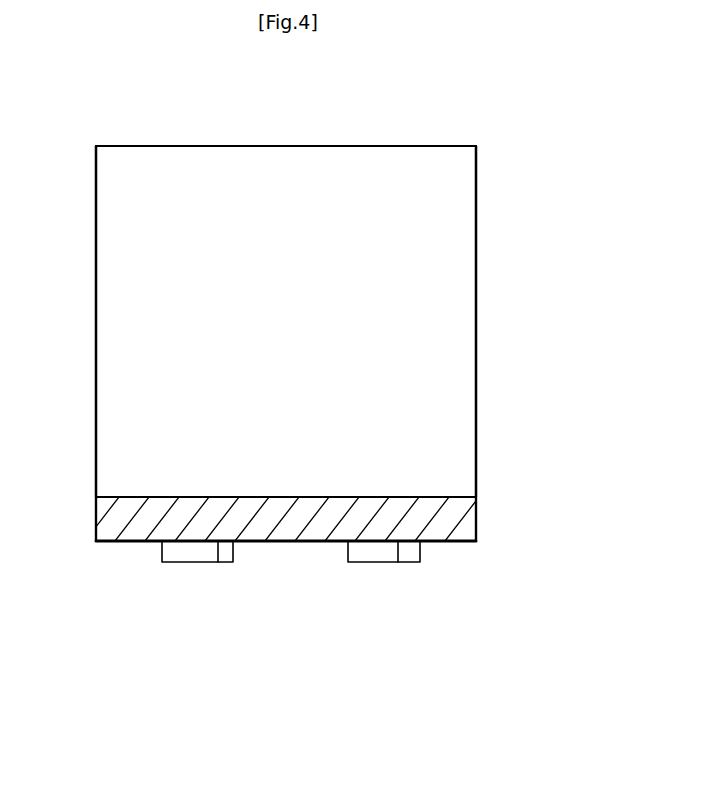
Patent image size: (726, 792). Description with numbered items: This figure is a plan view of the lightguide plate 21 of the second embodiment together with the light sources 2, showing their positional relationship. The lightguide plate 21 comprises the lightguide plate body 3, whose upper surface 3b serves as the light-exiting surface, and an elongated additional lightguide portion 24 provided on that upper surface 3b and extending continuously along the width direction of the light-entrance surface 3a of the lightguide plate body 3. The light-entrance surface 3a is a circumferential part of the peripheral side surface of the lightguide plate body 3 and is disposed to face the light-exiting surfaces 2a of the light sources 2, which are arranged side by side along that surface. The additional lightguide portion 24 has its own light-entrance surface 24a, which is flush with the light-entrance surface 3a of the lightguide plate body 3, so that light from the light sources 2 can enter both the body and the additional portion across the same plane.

The lightguide plate body 3 is at (490, 338).
The lightguide plate 21 is at (493, 186).
The upper surface 3b is at (307, 326).
The additional lightguide portion 24 is at (411, 490).
The light source 2 is at (193, 563).
The light-exiting surface 2a is at (162, 541).
The light-entrance surface 3a is at (223, 563).
The light-entrance surface 24a is at (364, 599).